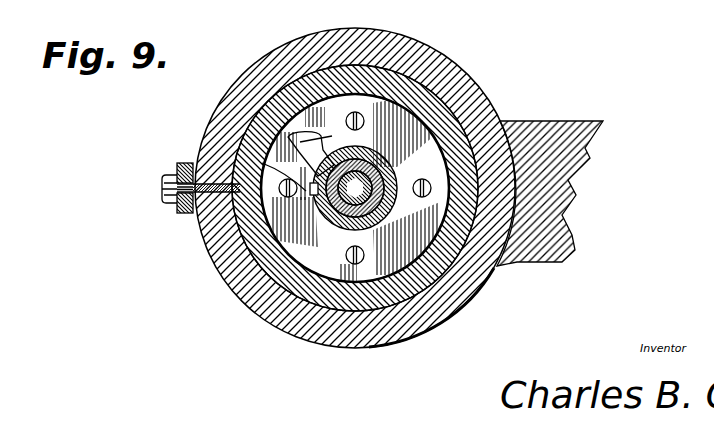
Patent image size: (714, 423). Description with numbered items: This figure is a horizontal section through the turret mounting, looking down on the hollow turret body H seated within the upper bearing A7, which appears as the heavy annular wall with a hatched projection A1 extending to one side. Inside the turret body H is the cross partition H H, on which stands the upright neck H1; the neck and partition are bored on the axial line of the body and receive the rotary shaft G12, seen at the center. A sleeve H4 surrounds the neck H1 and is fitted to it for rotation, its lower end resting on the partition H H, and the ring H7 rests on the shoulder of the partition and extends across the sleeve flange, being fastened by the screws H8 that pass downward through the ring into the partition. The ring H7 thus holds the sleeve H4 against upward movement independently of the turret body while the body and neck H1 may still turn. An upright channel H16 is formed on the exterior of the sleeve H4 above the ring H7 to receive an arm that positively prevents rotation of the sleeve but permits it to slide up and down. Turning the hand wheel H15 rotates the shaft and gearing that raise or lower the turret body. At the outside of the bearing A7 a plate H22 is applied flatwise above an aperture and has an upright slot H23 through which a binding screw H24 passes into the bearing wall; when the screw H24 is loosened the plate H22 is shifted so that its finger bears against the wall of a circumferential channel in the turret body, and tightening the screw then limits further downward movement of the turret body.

The housing A1 is at (555, 190).
The hollow turret body H is at (283, 303).
The upper bearing A7 is at (232, 297).
The screws H8 is at (213, 272).
The ring H7 is at (470, 298).
The sleeve H4 is at (338, 232).
The upright neck H1 is at (383, 177).
The rotary shaft G12 is at (387, 157).
The cross partition HH is at (286, 141).
The hand wheel H15 is at (332, 135).
The upright channel H16 is at (262, 163).
The plate H22 is at (173, 172).
The binding screw H24 is at (172, 208).
The upright slot H23 is at (187, 217).